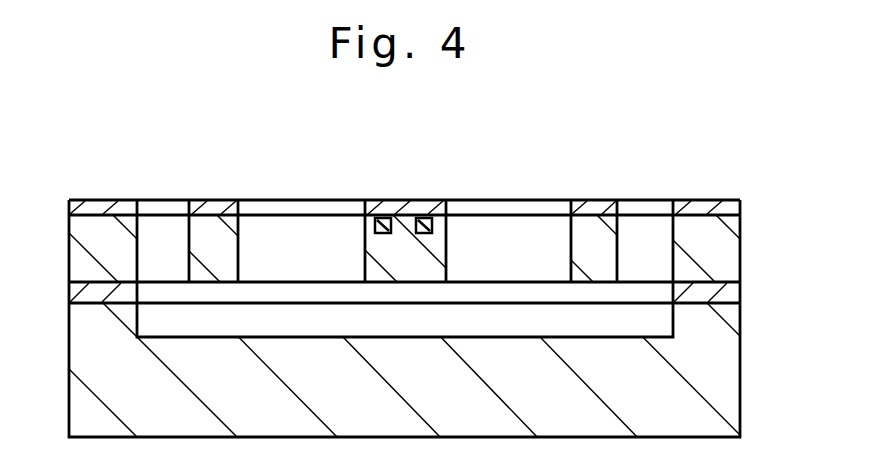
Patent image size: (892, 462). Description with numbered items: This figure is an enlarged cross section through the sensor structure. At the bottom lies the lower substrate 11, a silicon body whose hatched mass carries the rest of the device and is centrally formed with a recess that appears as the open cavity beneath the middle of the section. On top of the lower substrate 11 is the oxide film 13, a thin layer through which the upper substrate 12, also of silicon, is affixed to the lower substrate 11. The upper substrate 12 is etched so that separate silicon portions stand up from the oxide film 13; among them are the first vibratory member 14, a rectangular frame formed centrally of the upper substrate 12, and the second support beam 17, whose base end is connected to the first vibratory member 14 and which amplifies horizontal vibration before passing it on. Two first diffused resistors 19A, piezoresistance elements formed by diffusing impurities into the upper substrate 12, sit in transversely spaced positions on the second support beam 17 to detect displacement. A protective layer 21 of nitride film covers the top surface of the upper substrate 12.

The lower substrate 11 is at (740, 387).
The upper substrate 12 is at (740, 247).
The oxide film 13 is at (728, 297).
The first vibratory member 14 is at (593, 243).
The second support beam 17 is at (399, 240).
The first diffused resistors 19A is at (383, 219).
The protective layer 21 is at (90, 208).